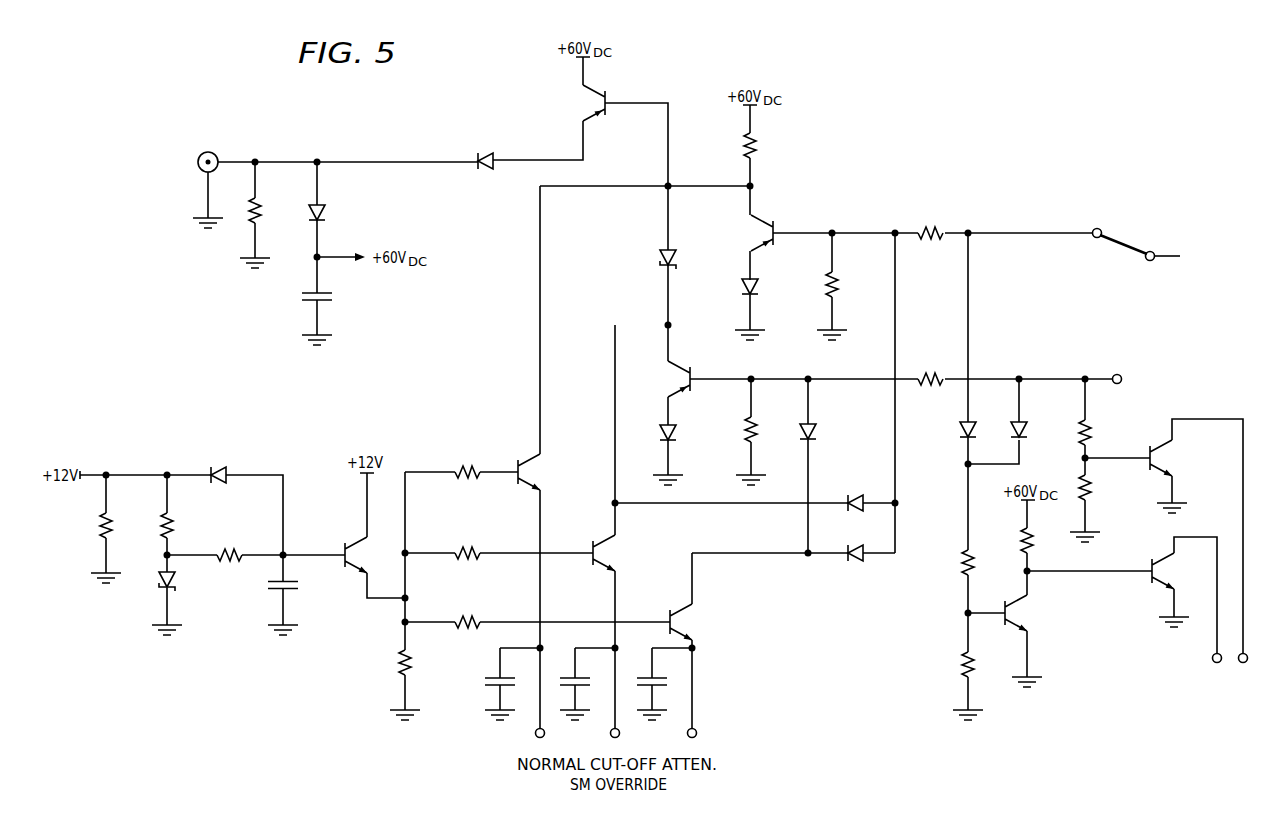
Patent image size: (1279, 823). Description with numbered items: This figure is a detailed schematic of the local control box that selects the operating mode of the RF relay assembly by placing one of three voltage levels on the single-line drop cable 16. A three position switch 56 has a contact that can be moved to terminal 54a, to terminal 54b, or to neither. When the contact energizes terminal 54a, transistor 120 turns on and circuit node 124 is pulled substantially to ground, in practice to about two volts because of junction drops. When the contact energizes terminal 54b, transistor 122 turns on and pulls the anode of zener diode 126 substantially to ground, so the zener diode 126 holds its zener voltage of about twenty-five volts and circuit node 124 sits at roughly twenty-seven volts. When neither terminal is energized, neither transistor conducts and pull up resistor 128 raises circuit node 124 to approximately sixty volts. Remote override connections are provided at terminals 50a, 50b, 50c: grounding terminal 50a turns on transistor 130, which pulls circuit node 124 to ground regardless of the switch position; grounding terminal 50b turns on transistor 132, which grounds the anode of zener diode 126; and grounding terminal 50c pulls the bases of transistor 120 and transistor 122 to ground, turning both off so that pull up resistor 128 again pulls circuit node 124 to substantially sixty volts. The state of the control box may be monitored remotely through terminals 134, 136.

The drop cable 16 is at (206, 152).
The pull up resistor 128 is at (766, 148).
The circuit node 124 is at (754, 184).
The transistor 120 is at (760, 216).
The zener diode 126 is at (660, 258).
The transistor 122 is at (678, 362).
The transistor 130 is at (531, 454).
The transistor 132 is at (608, 534).
The terminal 54a is at (1027, 233).
The terminal 54b is at (997, 379).
The three position switch 56 is at (1161, 238).
The terminal 136 is at (1213, 419).
The terminal 134 is at (1203, 537).
The terminal 50a is at (537, 705).
The terminal 50b is at (612, 705).
The terminal 50c is at (687, 705).